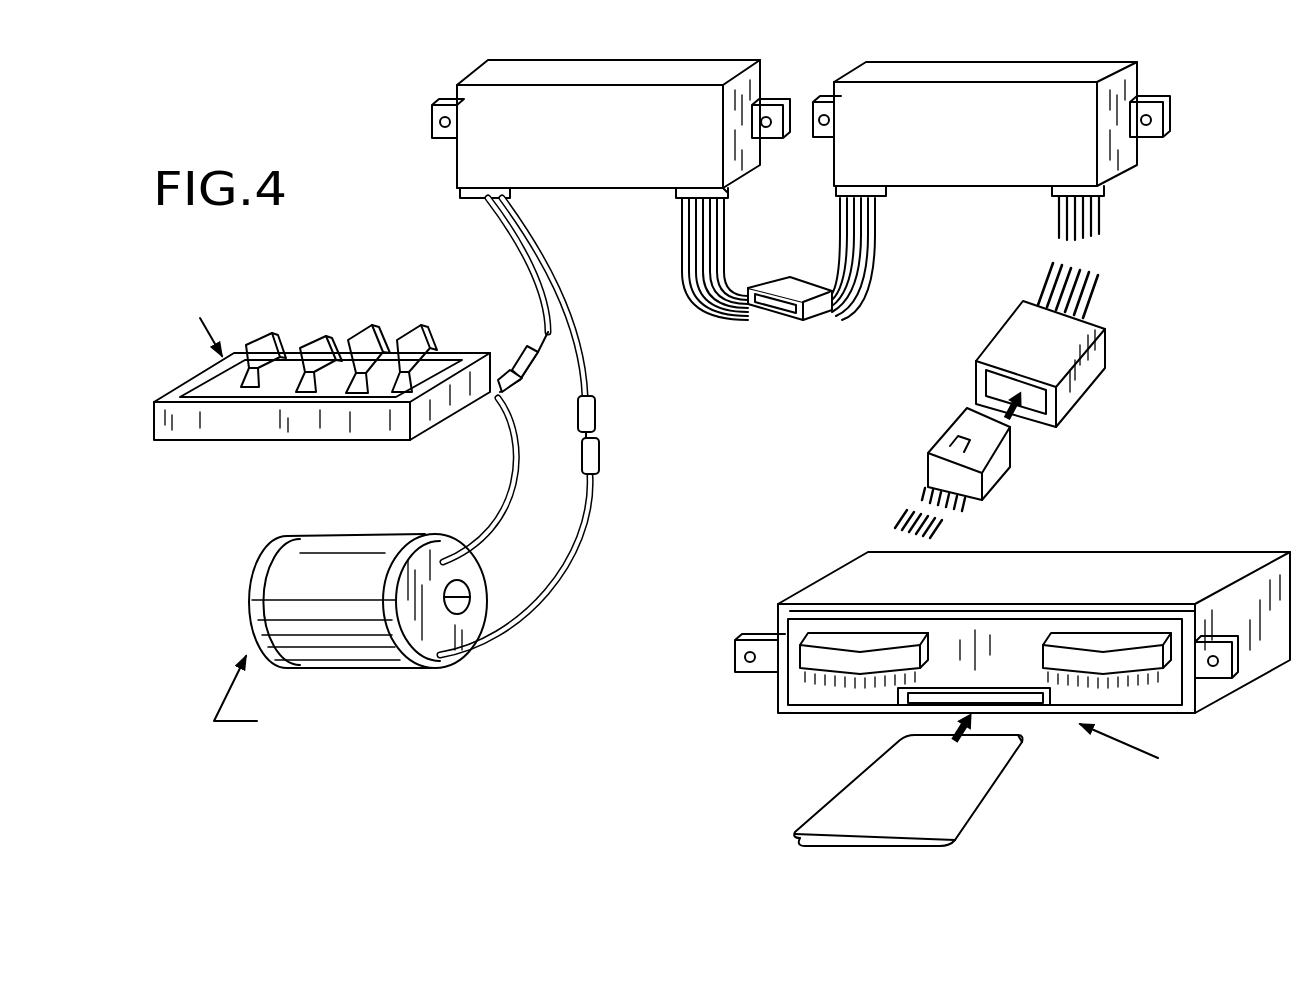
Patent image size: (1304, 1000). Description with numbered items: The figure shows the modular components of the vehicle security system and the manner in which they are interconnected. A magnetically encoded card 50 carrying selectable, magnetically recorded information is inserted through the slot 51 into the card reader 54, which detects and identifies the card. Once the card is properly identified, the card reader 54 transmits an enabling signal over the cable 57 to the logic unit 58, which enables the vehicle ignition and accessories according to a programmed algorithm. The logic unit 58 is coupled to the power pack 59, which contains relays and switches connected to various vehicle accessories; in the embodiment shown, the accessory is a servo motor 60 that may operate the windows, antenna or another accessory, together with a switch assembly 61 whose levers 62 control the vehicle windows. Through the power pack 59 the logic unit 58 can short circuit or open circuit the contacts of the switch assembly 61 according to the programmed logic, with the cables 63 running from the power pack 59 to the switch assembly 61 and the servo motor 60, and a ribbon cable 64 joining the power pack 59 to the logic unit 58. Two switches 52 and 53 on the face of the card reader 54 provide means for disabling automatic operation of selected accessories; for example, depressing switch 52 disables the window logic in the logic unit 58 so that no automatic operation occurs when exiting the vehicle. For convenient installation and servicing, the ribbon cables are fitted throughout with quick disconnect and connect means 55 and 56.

The magnetically encoded card 50 is at (932, 805).
The card slot 51 is at (928, 700).
The switch 52 is at (810, 656).
The switch 53 is at (1089, 652).
The card reader 54 is at (1198, 550).
The quick disconnect and connect means 55 is at (1003, 474).
The quick disconnect and connect means 56 is at (1068, 418).
The cable 57 is at (1102, 290).
The logic unit 58 is at (938, 187).
The power pack 59 is at (572, 190).
The servo motor 60 is at (222, 594).
The switch assembly 61 is at (278, 448).
The switch levers 62 is at (379, 330).
The cable 63 is at (590, 533).
The ribbon cable 64 is at (664, 270).